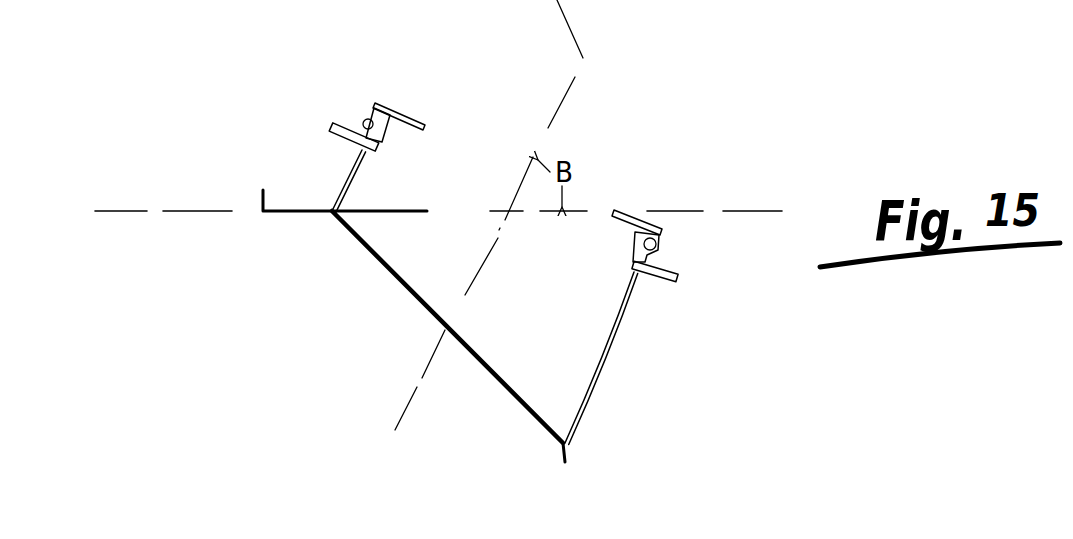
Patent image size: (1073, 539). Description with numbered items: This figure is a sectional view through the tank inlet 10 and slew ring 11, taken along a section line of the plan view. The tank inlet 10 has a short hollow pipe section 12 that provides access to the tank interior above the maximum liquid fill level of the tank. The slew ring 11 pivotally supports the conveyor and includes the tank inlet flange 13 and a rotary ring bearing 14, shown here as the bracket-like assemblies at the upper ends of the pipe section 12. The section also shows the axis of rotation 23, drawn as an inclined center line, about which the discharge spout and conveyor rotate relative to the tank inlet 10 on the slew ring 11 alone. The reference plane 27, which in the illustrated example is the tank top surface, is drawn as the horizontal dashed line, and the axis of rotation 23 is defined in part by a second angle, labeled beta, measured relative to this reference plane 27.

The tank inlet 10 is at (619, 352).
The slew ring 11 is at (667, 240).
The hollow pipe section 12 is at (622, 313).
The tank inlet flange 13 is at (676, 281).
The rotary ring bearing 14 is at (376, 103).
The axis of rotation 23 is at (557, 106).
The reference plane 27 is at (115, 211).